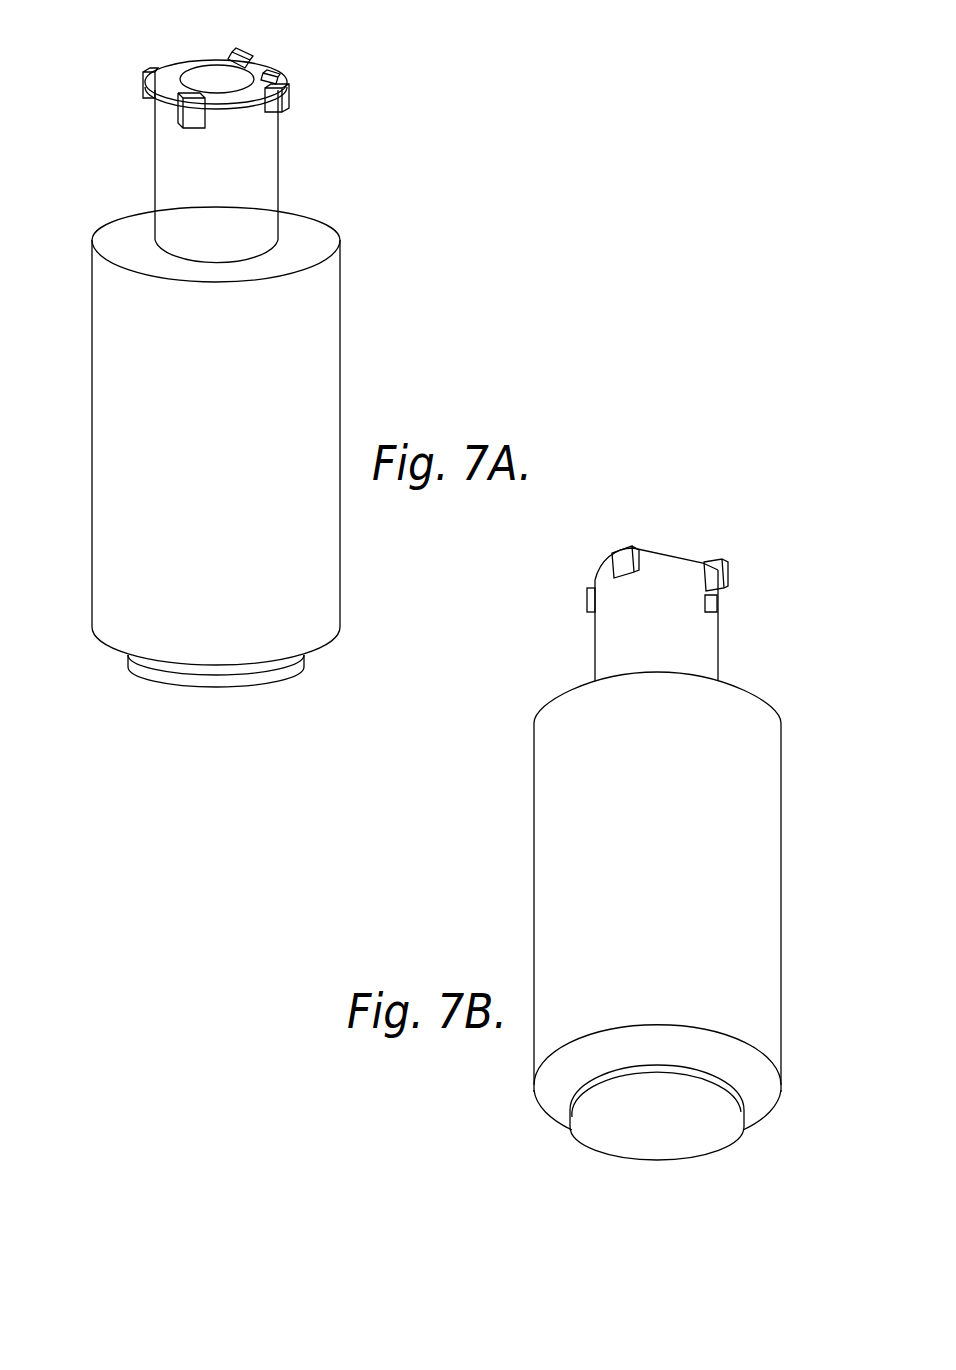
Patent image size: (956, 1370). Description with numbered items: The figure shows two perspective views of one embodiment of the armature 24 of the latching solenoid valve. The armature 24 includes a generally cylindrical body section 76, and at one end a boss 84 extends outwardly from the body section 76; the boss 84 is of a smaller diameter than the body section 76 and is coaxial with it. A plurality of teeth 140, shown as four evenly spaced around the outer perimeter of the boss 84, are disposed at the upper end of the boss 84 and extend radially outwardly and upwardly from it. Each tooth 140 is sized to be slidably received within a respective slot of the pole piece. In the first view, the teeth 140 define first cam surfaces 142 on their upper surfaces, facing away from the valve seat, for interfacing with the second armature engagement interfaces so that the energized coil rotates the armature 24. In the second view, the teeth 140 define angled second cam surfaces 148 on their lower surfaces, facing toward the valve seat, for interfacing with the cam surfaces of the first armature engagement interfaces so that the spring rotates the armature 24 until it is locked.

In FIG. 7A, the armature 24 is at (360, 119).
In FIG. 7B, the armature 24 is at (504, 686).
In FIG. 7A, the body section 76 is at (341, 368).
In FIG. 7B, the body section 76 is at (534, 858).
In FIG. 7A, the boss 84 is at (268, 160).
In FIG. 7B, the boss 84 is at (616, 642).
In FIG. 7A, the teeth 140 is at (143, 78).
In FIG. 7B, the teeth 140 is at (620, 548).
In FIG. 7A, the first cam surfaces 142 is at (240, 56).
In FIG. 7B, the second cam surfaces 148 is at (595, 580).